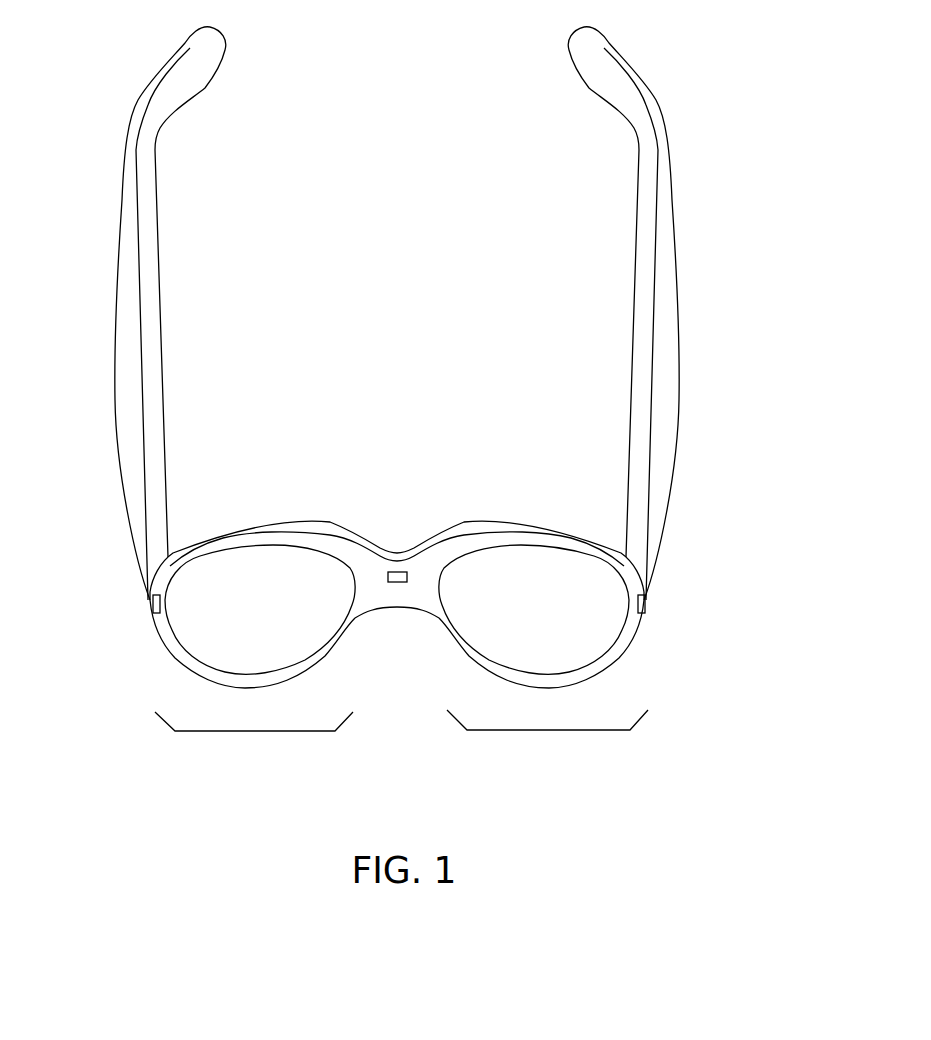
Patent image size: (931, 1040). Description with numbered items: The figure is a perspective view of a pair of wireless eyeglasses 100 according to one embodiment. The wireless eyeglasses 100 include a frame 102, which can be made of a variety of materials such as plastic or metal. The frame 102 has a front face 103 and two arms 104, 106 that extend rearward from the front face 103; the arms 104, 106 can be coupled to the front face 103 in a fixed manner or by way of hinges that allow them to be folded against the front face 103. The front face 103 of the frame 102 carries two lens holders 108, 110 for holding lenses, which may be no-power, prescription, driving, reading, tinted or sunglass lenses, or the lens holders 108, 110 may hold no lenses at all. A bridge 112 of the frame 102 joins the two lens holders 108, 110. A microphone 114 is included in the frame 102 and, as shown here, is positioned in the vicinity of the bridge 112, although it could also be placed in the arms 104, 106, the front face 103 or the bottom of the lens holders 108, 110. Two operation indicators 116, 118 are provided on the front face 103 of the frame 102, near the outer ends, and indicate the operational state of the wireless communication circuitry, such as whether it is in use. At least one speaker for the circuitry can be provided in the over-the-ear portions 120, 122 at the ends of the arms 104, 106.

The wireless eyeglasses 100 is at (444, 408).
The frame 102 is at (226, 637).
The front face 103 is at (568, 635).
The arm 104 is at (147, 313).
The arm 106 is at (645, 313).
The lens holder 108 is at (260, 731).
The lens holder 110 is at (557, 730).
The bridge 112 is at (398, 655).
The microphone 114 is at (392, 572).
The operation indicator 116 is at (150, 607).
The operation indicator 118 is at (648, 600).
The over-the-ear portion 120 is at (204, 113).
The over-the-ear portion 122 is at (582, 110).